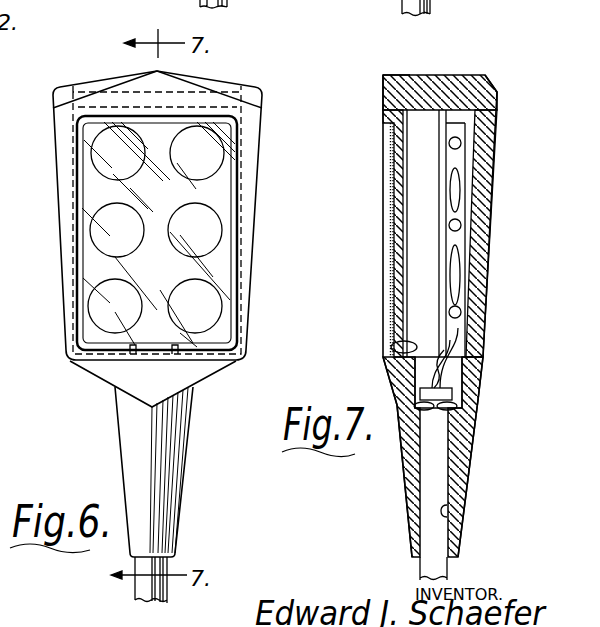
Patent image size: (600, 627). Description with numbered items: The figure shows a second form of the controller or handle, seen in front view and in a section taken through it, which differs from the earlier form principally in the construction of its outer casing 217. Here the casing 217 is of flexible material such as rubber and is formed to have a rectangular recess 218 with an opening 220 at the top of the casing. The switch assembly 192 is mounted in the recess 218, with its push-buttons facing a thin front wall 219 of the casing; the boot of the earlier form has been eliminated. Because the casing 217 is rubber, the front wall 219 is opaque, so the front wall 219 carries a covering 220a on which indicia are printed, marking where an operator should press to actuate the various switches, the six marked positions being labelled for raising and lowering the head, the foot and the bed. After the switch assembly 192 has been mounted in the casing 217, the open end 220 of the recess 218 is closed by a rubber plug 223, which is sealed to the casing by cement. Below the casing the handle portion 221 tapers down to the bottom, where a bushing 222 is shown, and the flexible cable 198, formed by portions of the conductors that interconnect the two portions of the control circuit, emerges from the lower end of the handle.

In FIG. 6, the switch assembly 192 is at (232, 239).
In FIG. 7, the switch assembly 192 is at (420, 180).
In FIG. 6, the flexible cable 198 is at (140, 598).
In FIG. 7, the flexible cable 198 is at (446, 572).
In FIG. 6, the outer casing 217 is at (247, 141).
In FIG. 7, the outer casing 217 is at (383, 108).
In FIG. 7, the rectangular recess 218 is at (395, 346).
In FIG. 7, the front wall 219 is at (392, 290).
In FIG. 7, the opening 220 is at (406, 73).
In FIG. 6, the covering 220a is at (213, 277).
In FIG. 7, the covering 220a is at (393, 205).
In FIG. 6, the handle 221 is at (176, 495).
In FIG. 7, the handle 221 is at (470, 472).
In FIG. 7, the strain relief bushing 222 is at (448, 512).
In FIG. 7, the rubber plug 223 is at (448, 75).